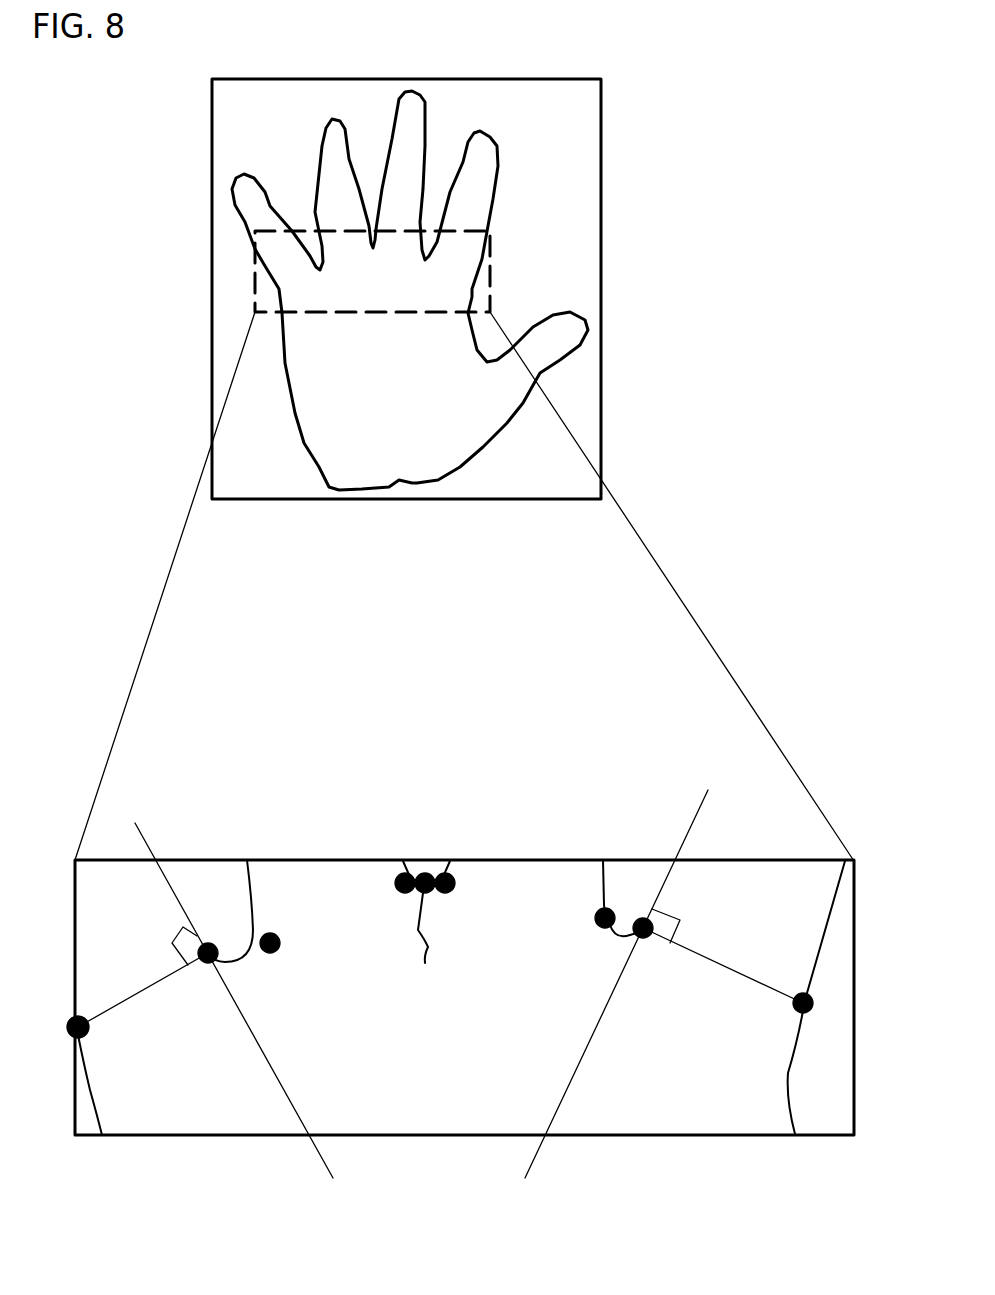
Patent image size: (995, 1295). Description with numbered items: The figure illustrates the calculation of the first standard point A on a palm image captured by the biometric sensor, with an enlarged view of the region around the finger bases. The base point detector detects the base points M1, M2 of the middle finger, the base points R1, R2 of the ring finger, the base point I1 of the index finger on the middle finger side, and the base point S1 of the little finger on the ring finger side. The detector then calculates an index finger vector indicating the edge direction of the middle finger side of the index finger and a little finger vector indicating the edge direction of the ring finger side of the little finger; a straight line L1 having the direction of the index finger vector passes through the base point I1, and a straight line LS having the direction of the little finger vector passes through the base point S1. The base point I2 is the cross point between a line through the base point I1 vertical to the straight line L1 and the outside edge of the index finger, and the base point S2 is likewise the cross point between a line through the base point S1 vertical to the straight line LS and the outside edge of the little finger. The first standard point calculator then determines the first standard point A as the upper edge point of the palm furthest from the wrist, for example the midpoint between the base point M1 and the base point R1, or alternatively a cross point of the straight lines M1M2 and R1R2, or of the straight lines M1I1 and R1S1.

The straight line LS is at (234, 991).
The straight line L1 is at (616, 977).
The base point of the little finger S1 is at (208, 979).
The base point of the little finger S2 is at (94, 1038).
The base point of the ring finger R1 is at (396, 900).
The base point of the ring finger R2 is at (277, 968).
The base point of the middle finger M1 is at (463, 900).
The base point of the middle finger M2 is at (588, 921).
The base point of the index finger I1 is at (650, 949).
The base point of the index finger I2 is at (793, 1017).
The first standard point A is at (424, 938).